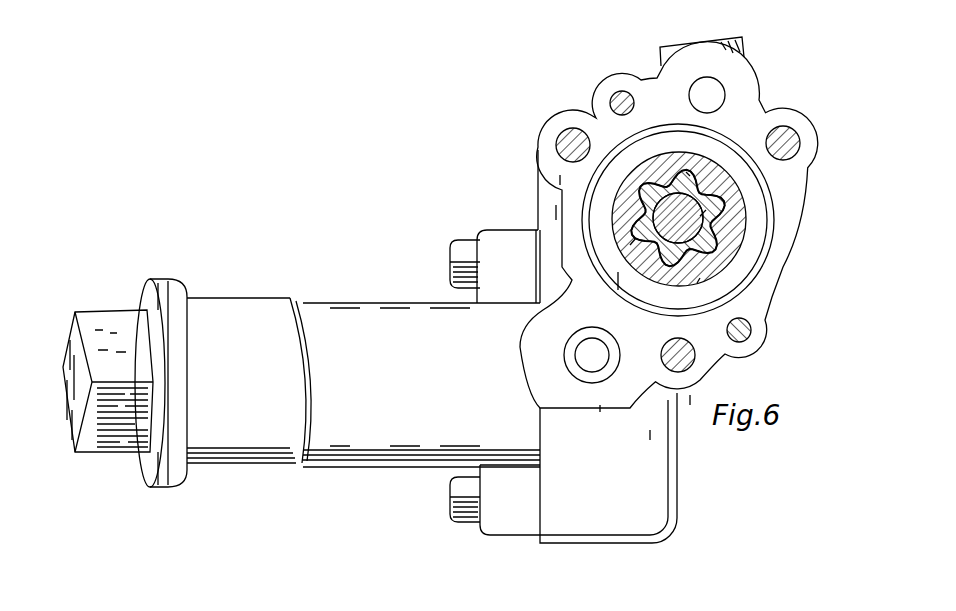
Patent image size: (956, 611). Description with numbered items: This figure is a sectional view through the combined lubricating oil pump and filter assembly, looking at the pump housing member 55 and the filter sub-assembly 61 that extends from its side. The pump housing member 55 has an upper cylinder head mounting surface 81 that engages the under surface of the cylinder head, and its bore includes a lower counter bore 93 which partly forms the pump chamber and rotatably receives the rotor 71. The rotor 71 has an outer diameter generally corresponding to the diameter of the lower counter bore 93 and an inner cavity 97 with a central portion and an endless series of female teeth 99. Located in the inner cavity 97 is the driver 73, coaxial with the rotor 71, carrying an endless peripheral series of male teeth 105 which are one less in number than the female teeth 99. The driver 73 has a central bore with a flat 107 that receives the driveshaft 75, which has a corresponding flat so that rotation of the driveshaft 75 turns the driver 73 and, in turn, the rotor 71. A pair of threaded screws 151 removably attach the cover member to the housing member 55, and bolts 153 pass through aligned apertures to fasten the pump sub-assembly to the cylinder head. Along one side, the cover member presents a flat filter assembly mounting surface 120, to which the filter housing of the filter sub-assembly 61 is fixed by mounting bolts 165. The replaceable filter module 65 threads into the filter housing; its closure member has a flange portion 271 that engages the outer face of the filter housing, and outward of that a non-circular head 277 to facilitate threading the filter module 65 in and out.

The pump housing member 55 is at (752, 298).
The filter sub-assembly 61 is at (370, 428).
The filter module 65 is at (107, 384).
The rotor 71 is at (706, 190).
The driver 73 is at (722, 193).
The driveshaft 75 is at (708, 243).
The cylinder head mounting surface 81 is at (672, 88).
The lower counter bore 93 is at (642, 232).
The inner cavity 97 is at (702, 216).
The female teeth 99 is at (698, 282).
The male teeth 105 is at (690, 176).
The flat 107 is at (632, 246).
The filter assembly mounting surface 120 is at (545, 486).
The threaded screws 151 is at (618, 98).
The bolts 153 is at (562, 140).
The mounting bolts 165 is at (452, 244).
The flange portion 271 is at (160, 283).
The non-circular head 277 is at (112, 322).